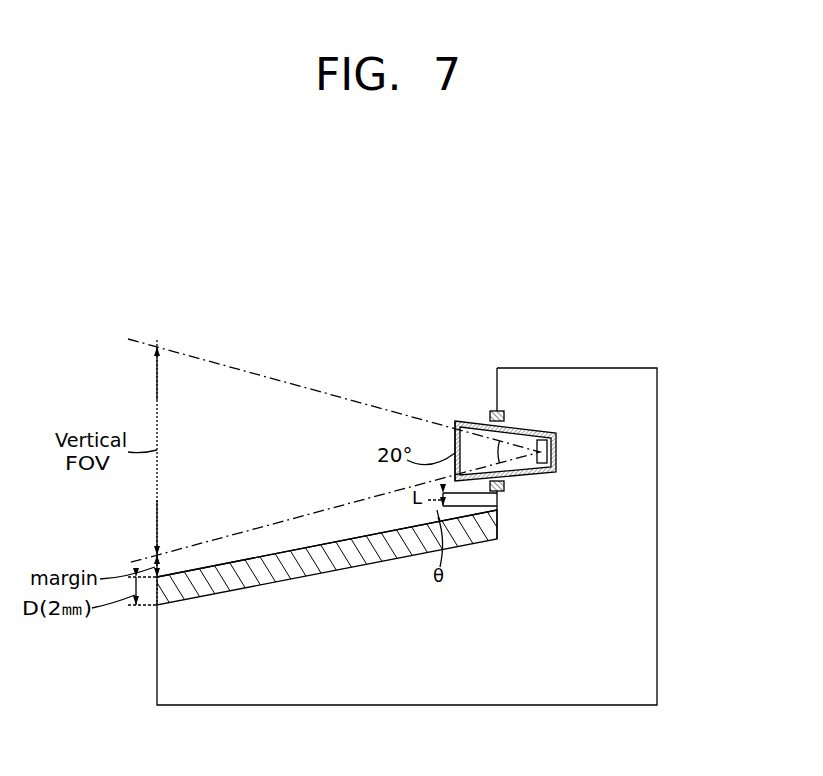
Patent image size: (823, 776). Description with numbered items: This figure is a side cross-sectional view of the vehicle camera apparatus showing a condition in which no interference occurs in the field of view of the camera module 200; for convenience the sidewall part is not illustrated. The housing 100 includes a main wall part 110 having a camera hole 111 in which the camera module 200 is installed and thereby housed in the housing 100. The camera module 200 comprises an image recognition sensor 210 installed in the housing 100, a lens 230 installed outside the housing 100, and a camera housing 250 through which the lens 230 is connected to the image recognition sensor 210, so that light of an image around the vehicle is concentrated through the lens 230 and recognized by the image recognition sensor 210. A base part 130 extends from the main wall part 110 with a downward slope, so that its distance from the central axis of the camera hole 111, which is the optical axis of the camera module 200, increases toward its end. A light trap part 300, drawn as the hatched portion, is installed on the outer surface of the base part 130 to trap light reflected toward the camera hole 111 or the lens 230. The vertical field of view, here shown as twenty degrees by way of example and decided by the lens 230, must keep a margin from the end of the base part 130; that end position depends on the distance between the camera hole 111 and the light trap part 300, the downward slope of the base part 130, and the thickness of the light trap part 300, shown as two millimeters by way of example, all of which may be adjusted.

The housing 100 is at (623, 385).
The main wall part 110 is at (499, 498).
The camera hole 111 is at (505, 488).
The base part 130 is at (405, 553).
The camera module 200 is at (543, 292).
The image recognition sensor 210 is at (547, 440).
The lens 230 is at (455, 428).
The camera housing 250 is at (481, 421).
The light trap part 300 is at (323, 567).